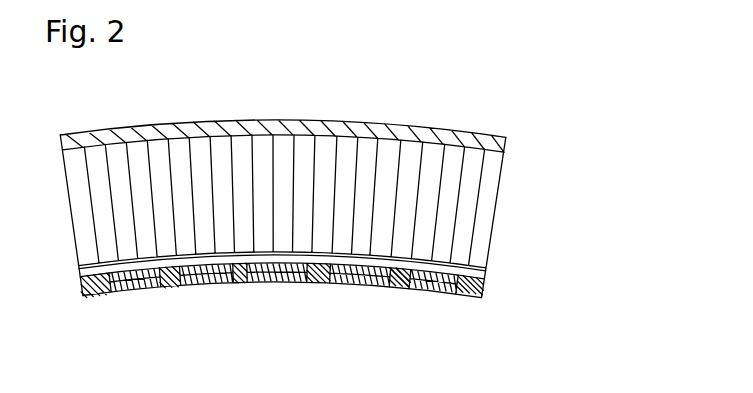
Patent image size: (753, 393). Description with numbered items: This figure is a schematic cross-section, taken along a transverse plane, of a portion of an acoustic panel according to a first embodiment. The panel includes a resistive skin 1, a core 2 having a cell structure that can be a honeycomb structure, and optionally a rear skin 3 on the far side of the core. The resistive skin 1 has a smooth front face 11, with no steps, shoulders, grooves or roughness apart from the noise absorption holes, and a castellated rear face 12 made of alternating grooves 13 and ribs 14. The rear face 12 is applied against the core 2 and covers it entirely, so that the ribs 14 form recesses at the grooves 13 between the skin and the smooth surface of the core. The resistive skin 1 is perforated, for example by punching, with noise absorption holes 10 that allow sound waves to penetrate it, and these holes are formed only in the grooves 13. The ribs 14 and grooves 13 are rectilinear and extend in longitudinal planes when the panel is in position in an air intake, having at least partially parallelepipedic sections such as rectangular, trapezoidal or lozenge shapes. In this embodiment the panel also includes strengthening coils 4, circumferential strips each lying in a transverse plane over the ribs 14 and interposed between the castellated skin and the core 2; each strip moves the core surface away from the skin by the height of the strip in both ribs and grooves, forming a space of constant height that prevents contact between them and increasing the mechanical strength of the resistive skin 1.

The resistive skin 1 is at (484, 288).
The core 2 is at (487, 207).
The rear skin 3 is at (508, 143).
The strengthening coils 4 is at (487, 272).
The noise absorption holes 10 is at (431, 294).
The front face 11 is at (397, 292).
The castellated rear face 12 is at (415, 256).
The grooves 13 is at (130, 288).
The ribs 14 is at (248, 282).